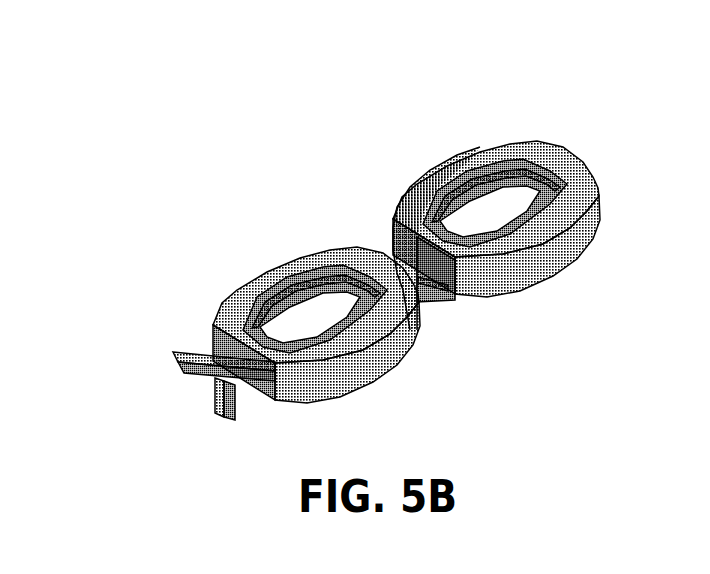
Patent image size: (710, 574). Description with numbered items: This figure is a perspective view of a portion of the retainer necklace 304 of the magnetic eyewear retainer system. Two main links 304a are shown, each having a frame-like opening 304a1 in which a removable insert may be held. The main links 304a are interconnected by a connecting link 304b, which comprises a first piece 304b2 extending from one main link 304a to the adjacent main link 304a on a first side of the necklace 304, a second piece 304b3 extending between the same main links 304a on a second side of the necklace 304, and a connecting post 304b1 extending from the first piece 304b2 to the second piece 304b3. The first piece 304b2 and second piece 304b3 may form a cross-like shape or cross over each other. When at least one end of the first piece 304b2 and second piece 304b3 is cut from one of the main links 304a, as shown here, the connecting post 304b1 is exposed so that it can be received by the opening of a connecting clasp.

The retainer necklace 304 is at (380, 244).
The main link 304a is at (418, 150).
The frame-like opening 304a1 is at (508, 215).
The connecting link 304b is at (309, 299).
The connecting post 304b1 is at (213, 378).
The first piece 304b2 is at (397, 257).
The second piece 304b3 is at (218, 403).